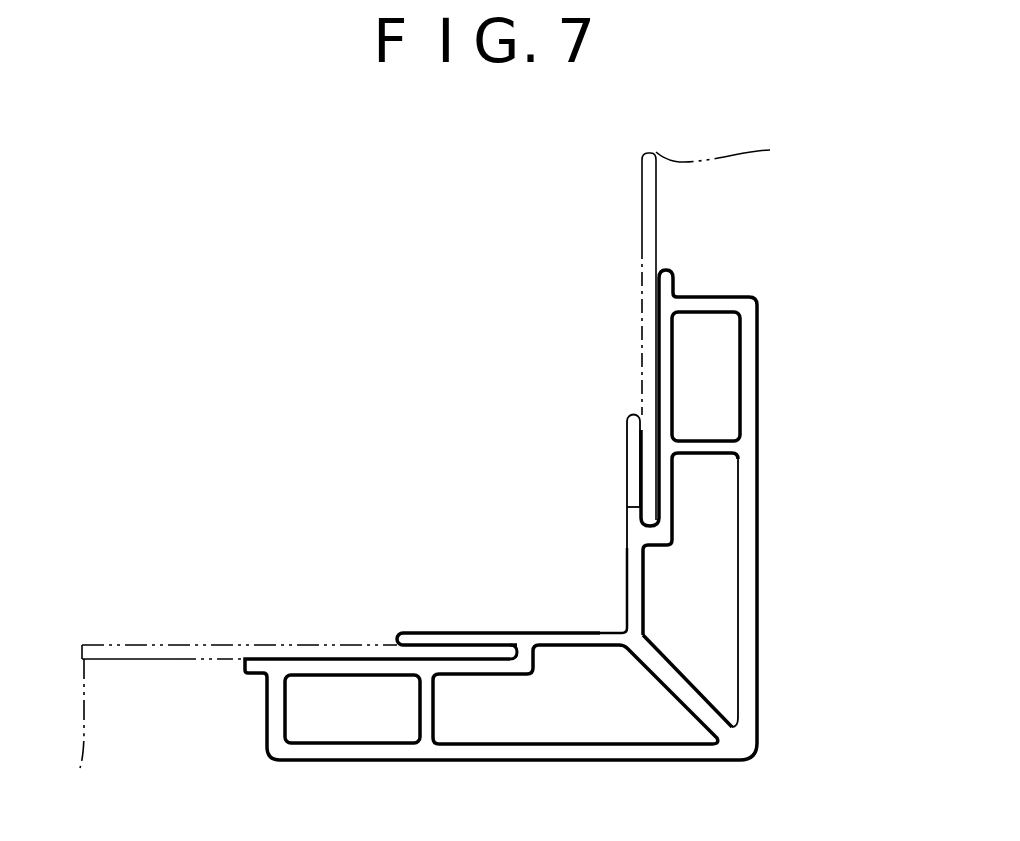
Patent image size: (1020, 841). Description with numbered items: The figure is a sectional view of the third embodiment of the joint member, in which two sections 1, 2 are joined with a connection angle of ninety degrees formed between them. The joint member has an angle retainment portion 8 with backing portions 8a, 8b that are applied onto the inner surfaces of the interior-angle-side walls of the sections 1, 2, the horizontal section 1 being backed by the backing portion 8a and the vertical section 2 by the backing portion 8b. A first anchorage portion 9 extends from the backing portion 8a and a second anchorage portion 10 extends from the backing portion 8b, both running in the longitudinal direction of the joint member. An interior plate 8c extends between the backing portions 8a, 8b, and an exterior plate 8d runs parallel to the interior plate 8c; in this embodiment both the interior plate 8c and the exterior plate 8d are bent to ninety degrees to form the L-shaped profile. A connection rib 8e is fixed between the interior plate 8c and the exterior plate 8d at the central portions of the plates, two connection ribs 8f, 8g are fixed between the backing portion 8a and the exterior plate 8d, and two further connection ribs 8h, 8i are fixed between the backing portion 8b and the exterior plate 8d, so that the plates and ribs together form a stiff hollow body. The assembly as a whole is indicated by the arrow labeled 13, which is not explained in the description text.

The section 1 is at (157, 645).
The section 2 is at (642, 200).
The angle retainment portion 8 is at (745, 703).
The backing portion 8a is at (343, 662).
The backing portion 8b is at (663, 341).
The interior plate 8c is at (632, 562).
The exterior plate 8d is at (751, 585).
The connection rib 8e is at (690, 702).
The connection rib 8f is at (283, 714).
The connection rib 8g is at (427, 715).
The connection rib 8h is at (702, 450).
The connection rib 8i is at (713, 305).
The first anchorage portion 9 is at (447, 636).
The second anchorage portion 10 is at (630, 438).
The frame assembly 13 is at (774, 650).